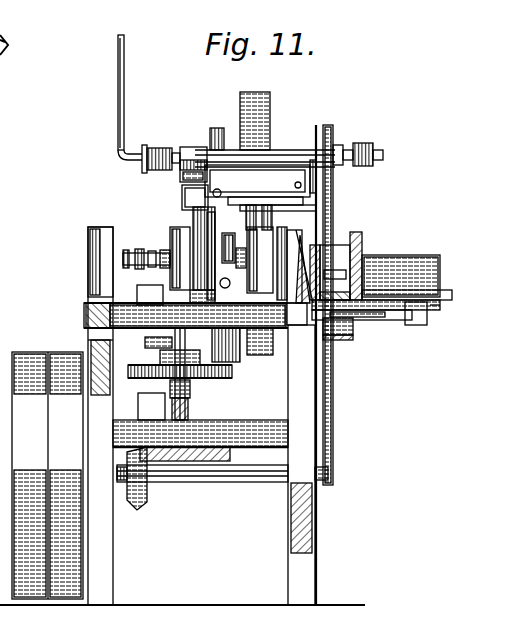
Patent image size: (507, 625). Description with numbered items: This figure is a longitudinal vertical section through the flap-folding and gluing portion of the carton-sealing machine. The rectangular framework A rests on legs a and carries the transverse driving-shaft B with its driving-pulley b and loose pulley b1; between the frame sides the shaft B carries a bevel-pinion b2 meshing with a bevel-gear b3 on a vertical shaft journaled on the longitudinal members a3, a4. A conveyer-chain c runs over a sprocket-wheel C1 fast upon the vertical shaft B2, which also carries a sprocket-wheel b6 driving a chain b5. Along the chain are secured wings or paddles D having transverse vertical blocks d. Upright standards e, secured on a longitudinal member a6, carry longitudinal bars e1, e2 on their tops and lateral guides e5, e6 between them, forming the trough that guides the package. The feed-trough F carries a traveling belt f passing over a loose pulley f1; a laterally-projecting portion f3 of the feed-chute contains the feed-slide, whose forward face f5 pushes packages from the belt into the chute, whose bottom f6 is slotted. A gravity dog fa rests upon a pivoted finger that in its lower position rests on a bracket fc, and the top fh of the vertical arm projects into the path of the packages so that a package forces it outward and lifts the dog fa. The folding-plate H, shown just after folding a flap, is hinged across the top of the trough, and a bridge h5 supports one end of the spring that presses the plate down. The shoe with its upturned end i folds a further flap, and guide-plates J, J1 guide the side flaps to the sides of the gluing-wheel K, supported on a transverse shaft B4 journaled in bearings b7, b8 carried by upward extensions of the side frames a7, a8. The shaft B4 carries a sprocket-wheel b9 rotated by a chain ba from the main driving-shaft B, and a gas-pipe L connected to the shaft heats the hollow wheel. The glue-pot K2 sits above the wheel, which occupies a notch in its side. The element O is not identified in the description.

The gas-pipe L is at (124, 85).
The gluing-wheel K is at (272, 100).
The glue-pot K2 is at (230, 152).
The guide-plate J is at (285, 200).
The guide-plate J1 is at (220, 132).
The folding-plate H is at (262, 175).
The bearing b7 is at (318, 172).
The sprocket-wheel b9 is at (148, 343).
The transverse shaft B4 is at (350, 148).
The side frame a8 is at (320, 176).
The bridge h5 is at (334, 196).
The chain ba is at (320, 206).
The longitudinal bar e1 is at (318, 214).
The forward face of feed-slide f5 is at (366, 243).
The feed-trough F is at (365, 257).
The laterally-projecting portion of feed-chute f3 is at (396, 290).
The bottom of chute f6 is at (452, 295).
The top of vertical arm fh is at (336, 266).
The gravity dog fa is at (425, 320).
The bracket fc is at (412, 326).
The traveling belt f is at (348, 337).
The loose pulley f1 is at (338, 341).
The upright standard e is at (300, 266).
The longitudinal bar e2 is at (227, 221).
The lateral guide e5 is at (243, 300).
The lateral guide e6 is at (275, 300).
The side frame a7 is at (182, 197).
The bearing b8 is at (188, 147).
The transverse vertical block d is at (100, 228).
The wings or paddles D is at (180, 262).
The conveyer-chain c is at (137, 254).
The sprocket-wheel C1 is at (163, 251).
The upturned end of shoe i is at (260, 242).
The framework A is at (186, 315).
The longitudinal member a6 is at (297, 314).
The longitudinal member a3 is at (150, 295).
The longitudinal member a4 is at (151, 406).
The vertical shaft B2 is at (180, 374).
The sprocket-wheel b6 is at (206, 378).
The chain b5 is at (232, 378).
The block O is at (262, 356).
The driving-pulley b is at (47, 475).
The loose pulley b1 is at (34, 436).
The driving-shaft B is at (183, 483).
The bevel-pinion b2 is at (140, 502).
The bevel-gear b3 is at (213, 468).
The legs a is at (202, 365).